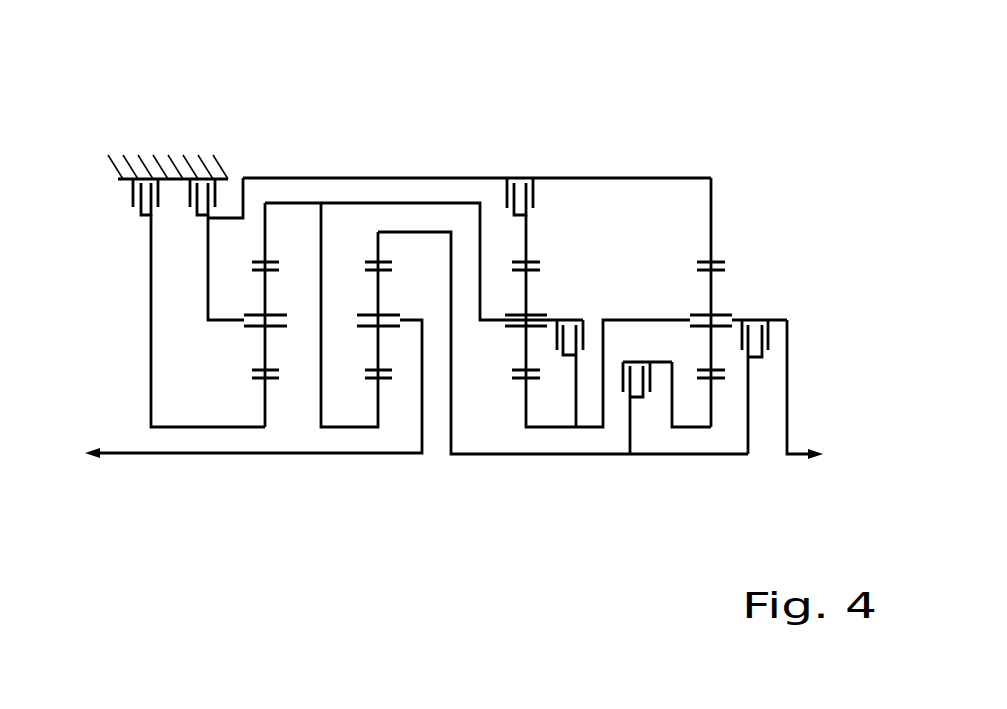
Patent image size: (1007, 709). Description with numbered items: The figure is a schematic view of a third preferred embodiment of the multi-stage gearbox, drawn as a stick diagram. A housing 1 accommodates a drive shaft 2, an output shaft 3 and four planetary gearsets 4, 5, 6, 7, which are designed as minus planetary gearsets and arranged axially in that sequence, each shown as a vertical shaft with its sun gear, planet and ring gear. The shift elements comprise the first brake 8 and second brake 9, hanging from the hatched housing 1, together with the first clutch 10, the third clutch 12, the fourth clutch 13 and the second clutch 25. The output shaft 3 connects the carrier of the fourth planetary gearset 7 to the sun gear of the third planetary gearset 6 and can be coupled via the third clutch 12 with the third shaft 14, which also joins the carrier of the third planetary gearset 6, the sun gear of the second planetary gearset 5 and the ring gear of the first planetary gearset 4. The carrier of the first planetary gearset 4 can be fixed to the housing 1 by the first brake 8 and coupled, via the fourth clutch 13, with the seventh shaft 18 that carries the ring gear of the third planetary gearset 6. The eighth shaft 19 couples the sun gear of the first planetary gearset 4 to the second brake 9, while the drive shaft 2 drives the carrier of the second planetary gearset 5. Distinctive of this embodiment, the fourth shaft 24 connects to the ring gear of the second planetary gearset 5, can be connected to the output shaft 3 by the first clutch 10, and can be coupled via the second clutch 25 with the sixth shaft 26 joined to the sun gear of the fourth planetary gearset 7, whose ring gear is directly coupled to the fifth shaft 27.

The housing 1 is at (155, 165).
The drive shaft 2 is at (333, 455).
The output shaft 3 is at (787, 407).
The first planetary gearset 4 is at (267, 168).
The second planetary gearset 5 is at (380, 168).
The third planetary gearset 6 is at (527, 168).
The fourth planetary gearset 7 is at (711, 168).
The first brake 8 is at (201, 195).
The second brake 9 is at (143, 200).
The first clutch 10 is at (755, 327).
The third clutch 12 is at (570, 333).
The fourth clutch 13 is at (512, 195).
The third shaft 14 is at (293, 203).
The seventh shaft 18 is at (527, 232).
The eighth shaft 19 is at (150, 360).
The fourth shaft 24 is at (473, 455).
The second clutch 25 is at (641, 395).
The sixth shaft 26 is at (693, 428).
The fifth shaft 27 is at (345, 178).